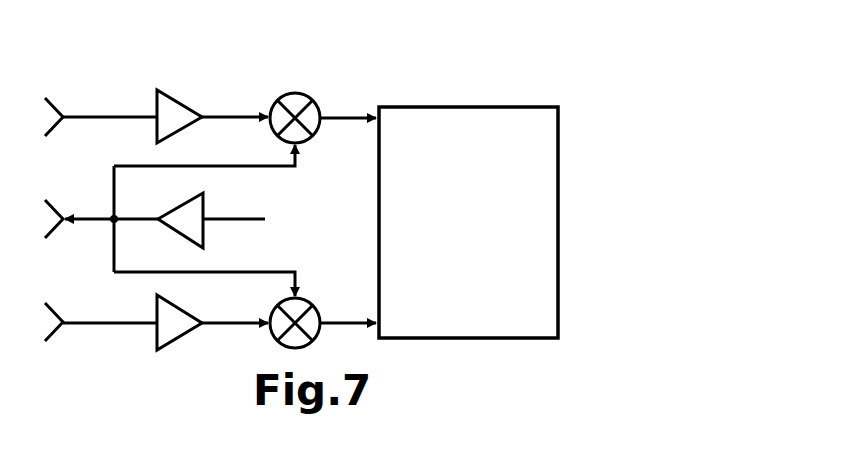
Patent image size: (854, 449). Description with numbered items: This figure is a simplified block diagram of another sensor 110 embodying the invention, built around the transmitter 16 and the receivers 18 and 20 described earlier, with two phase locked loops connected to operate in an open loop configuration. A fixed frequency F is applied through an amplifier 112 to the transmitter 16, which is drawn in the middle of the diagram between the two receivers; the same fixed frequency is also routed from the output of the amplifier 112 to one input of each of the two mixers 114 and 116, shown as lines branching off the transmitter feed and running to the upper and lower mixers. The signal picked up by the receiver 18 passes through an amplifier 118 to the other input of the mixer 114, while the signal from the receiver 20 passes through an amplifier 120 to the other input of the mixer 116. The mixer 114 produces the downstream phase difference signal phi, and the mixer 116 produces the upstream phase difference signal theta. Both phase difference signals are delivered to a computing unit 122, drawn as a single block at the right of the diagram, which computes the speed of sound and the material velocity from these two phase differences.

The sensor 110 is at (140, 76).
The receiver 18 is at (58, 100).
The transmitter 16 is at (52, 203).
The receiver 20 is at (57, 315).
The amplifier 118 is at (178, 97).
The amplifier 120 is at (175, 343).
The amplifier 112 is at (205, 201).
The mixer 114 is at (297, 92).
The mixer 116 is at (320, 302).
The computing unit 122 is at (558, 225).